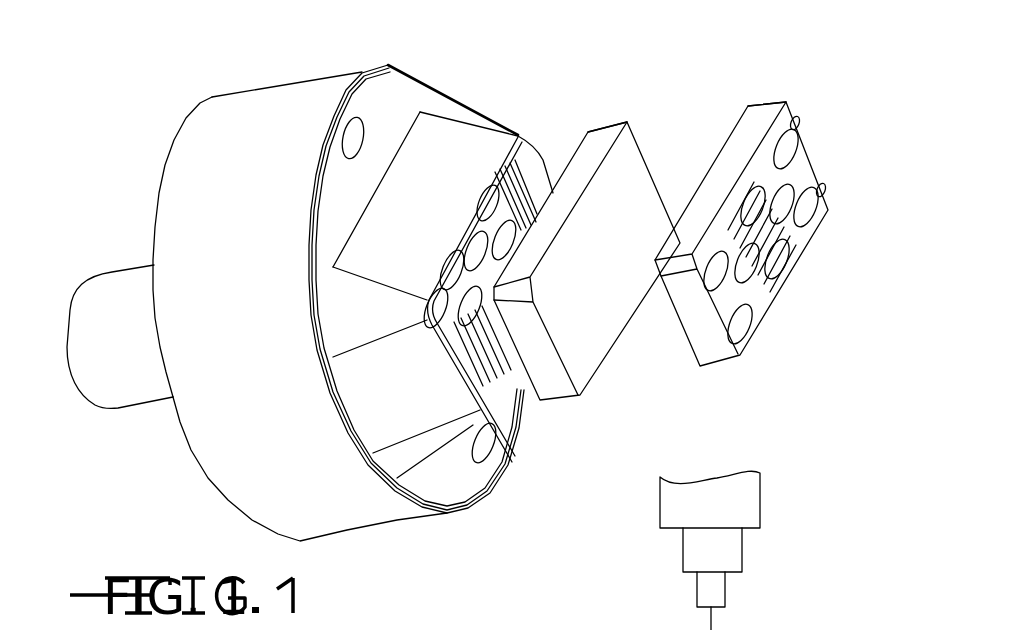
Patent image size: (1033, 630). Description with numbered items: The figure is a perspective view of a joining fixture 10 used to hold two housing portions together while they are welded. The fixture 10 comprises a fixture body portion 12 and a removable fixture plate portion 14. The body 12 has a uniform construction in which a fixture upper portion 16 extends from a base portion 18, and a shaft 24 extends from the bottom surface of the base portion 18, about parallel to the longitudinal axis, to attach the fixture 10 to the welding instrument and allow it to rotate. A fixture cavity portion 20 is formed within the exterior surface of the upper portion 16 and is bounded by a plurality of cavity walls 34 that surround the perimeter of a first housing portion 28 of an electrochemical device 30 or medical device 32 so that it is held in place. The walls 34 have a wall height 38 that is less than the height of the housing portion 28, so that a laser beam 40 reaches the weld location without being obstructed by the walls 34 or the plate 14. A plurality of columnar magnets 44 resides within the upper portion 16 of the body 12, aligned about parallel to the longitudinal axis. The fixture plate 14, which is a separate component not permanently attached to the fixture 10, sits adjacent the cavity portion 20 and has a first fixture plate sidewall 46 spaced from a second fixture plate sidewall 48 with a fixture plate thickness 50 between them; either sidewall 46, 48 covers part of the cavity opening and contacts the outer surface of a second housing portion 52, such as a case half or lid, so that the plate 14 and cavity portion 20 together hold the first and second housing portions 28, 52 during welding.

The joining fixture 10 is at (138, 148).
The fixture body portion 12 is at (346, 261).
The removable fixture plate portion 14 is at (765, 221).
The fixture upper portion 16 is at (433, 402).
The base portion 18 is at (342, 500).
The fixture cavity portion 20 is at (502, 355).
The shaft 24 is at (112, 292).
The first housing portion 28 is at (590, 246).
The electrochemical device 30 is at (590, 277).
The medical device 32 is at (613, 350).
The cavity walls 34 is at (457, 302).
The wall height 38 is at (678, 550).
The laser beam 40 is at (742, 629).
The magnets 44 is at (474, 318).
The first fixture plate sidewall 46 is at (706, 168).
The second fixture plate sidewall 48 is at (797, 248).
The fixture plate thickness 50 is at (769, 97).
The second housing portion 52 is at (627, 118).